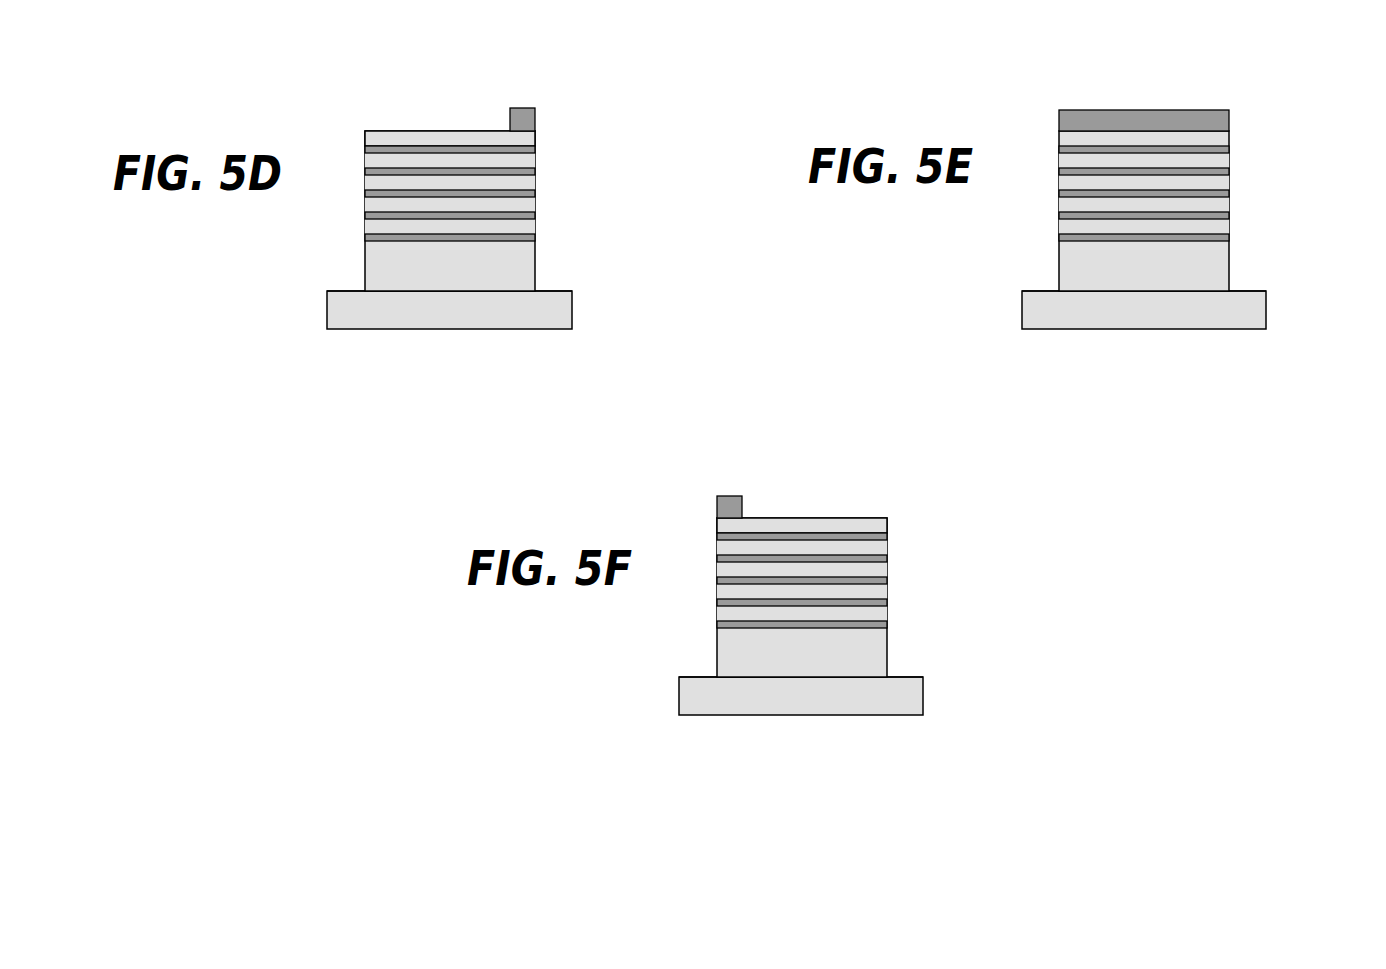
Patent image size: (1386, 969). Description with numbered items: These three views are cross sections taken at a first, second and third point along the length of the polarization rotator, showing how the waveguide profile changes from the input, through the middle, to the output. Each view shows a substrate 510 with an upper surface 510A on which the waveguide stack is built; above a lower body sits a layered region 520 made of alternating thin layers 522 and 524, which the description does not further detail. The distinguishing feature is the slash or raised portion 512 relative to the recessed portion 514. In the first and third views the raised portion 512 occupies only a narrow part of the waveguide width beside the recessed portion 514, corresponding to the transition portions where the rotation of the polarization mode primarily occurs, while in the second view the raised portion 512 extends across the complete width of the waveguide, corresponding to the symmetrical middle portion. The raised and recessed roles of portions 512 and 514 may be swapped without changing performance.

In FIG. 5D, the substrate 510 is at (432, 321).
In FIG. 5E, the substrate 510 is at (1126, 321).
In FIG. 5F, the substrate 510 is at (783, 707).
In FIG. 5D, the top surface of substrate 510A is at (338, 291).
In FIG. 5E, the top surface of substrate 510A is at (1033, 291).
In FIG. 5F, the top surface of substrate 510A is at (692, 677).
In FIG. 5D, the raised portion 512 is at (520, 117).
In FIG. 5E, the raised portion 512 is at (1143, 115).
In FIG. 5F, the raised portion 512 is at (728, 505).
In FIG. 5D, the recessed portion 514 is at (380, 131).
In FIG. 5F, the recessed portion 514 is at (850, 518).
In FIG. 5D, the multiple quantum well active region 520 is at (543, 133).
In FIG. 5E, the multiple quantum well active region 520 is at (1237, 133).
In FIG. 5F, the multiple quantum well active region 520 is at (895, 520).
In FIG. 5D, the quantum well layers 522 is at (537, 215).
In FIG. 5E, the quantum well layers 522 is at (1231, 215).
In FIG. 5F, the quantum well layers 522 is at (889, 602).
In FIG. 5D, the barrier layers 524 is at (537, 203).
In FIG. 5E, the barrier layers 524 is at (1231, 203).
In FIG. 5F, the barrier layers 524 is at (889, 590).